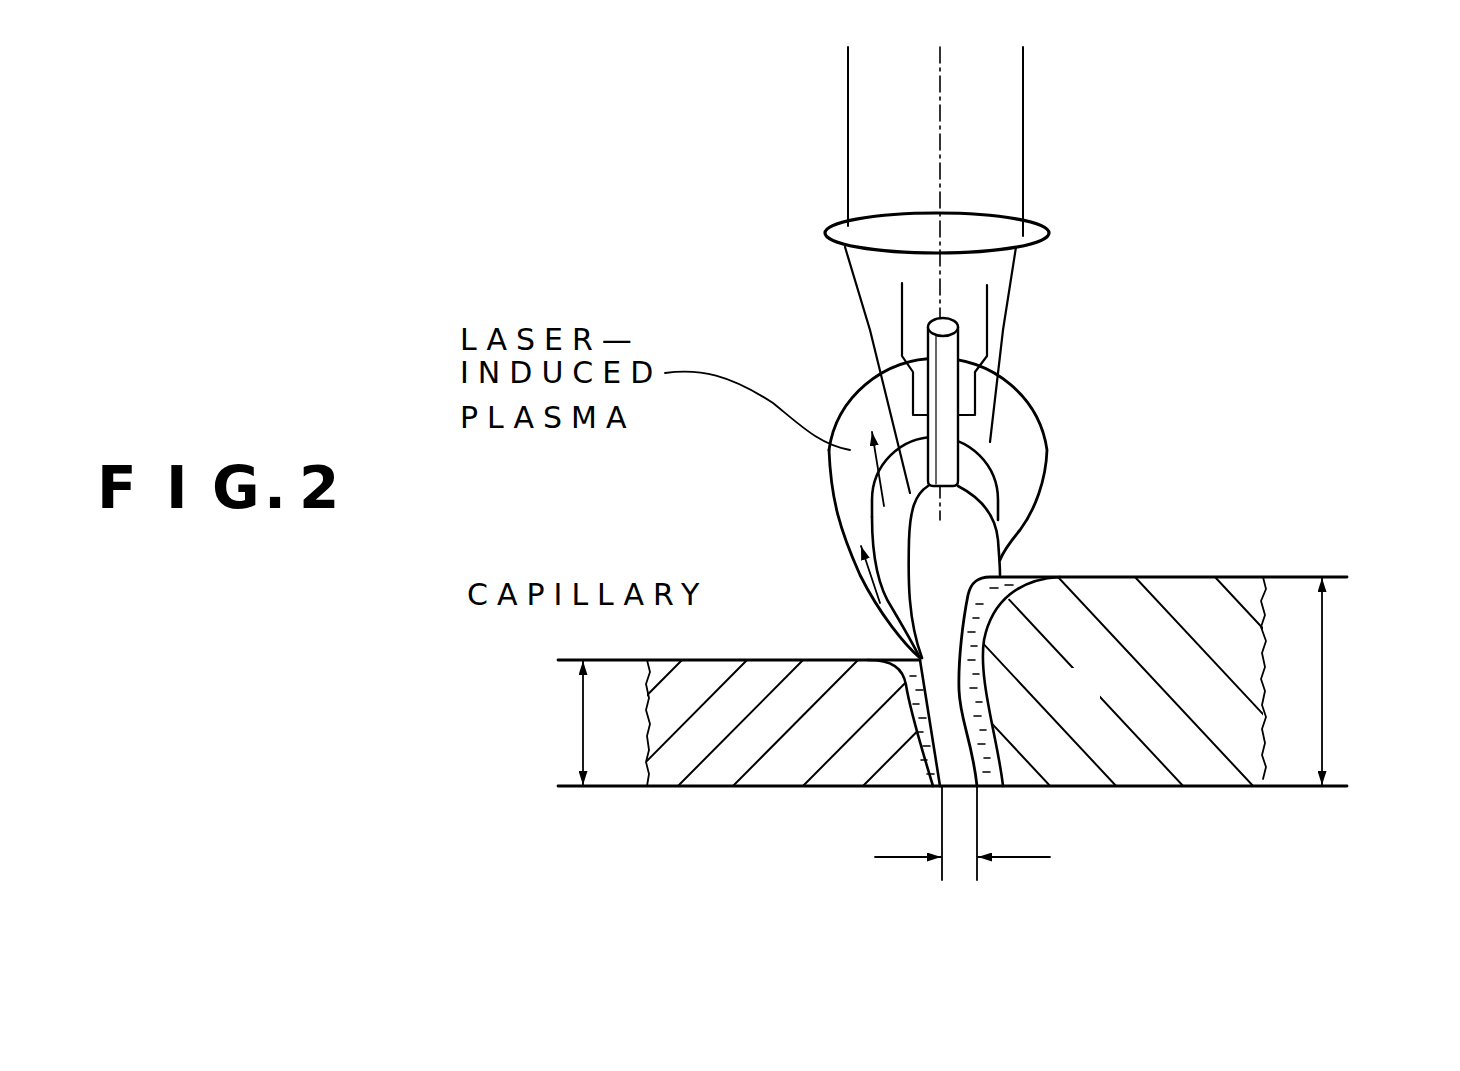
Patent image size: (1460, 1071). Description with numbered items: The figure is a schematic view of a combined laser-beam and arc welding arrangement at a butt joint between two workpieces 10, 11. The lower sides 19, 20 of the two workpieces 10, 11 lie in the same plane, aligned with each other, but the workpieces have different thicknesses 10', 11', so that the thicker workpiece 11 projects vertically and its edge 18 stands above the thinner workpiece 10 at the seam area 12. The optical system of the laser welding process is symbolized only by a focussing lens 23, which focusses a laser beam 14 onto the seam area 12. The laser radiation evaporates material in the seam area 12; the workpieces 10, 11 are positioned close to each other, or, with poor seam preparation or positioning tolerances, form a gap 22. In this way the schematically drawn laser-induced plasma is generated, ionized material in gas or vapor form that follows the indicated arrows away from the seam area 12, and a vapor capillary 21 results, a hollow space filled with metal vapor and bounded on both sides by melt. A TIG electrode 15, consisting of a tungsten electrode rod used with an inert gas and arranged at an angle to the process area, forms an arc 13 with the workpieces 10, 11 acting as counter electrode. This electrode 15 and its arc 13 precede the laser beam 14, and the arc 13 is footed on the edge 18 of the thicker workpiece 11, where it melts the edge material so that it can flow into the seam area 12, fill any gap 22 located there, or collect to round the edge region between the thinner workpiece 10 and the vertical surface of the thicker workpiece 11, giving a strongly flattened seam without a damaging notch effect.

The workpiece 10 is at (772, 772).
The thickness of workpiece 10' is at (527, 723).
The workpiece 11 is at (1133, 736).
The thickness of workpiece 11' is at (1375, 681).
The seam area 12 is at (933, 794).
The arc 13 is at (968, 558).
The laser beam 14 is at (882, 310).
The electrode 15 is at (987, 308).
The edge 18 is at (980, 605).
The lower side 19 is at (730, 786).
The lower side 20 is at (1245, 788).
The vapor capillary 21 is at (940, 720).
The gap 22 is at (992, 855).
The focussing lens 23 is at (1047, 232).